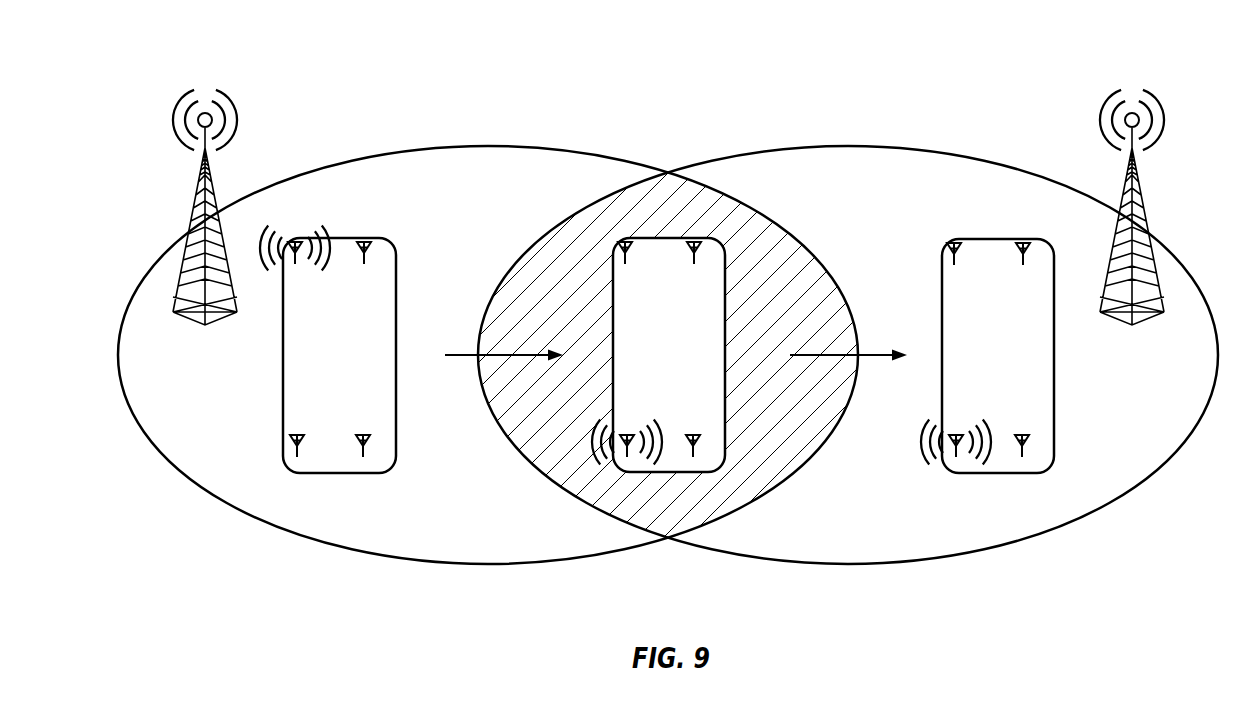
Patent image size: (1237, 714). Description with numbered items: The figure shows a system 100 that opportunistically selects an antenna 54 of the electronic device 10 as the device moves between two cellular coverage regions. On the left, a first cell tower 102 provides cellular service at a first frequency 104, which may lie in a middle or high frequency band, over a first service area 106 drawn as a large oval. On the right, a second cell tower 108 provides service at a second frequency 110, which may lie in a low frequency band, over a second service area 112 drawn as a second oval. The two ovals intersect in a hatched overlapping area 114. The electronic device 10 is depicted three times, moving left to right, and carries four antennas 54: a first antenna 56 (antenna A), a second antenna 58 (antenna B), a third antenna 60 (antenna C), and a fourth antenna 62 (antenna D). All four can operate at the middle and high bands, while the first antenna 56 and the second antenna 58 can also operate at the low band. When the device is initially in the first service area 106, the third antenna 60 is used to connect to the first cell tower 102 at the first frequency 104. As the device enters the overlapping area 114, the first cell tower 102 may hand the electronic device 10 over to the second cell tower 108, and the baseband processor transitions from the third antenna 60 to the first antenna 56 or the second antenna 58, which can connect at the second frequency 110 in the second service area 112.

The electronic device 10 is at (623, 298).
The antennas 54 is at (333, 331).
The first antenna 56 is at (292, 442).
The second antenna 58 is at (370, 442).
The third antenna 60 is at (297, 240).
The fourth antenna 62 is at (378, 252).
The system 100 is at (690, 58).
The first cell tower 102 is at (192, 213).
The first frequency 104 is at (215, 190).
The first service area 106 is at (478, 553).
The second cell tower 108 is at (1144, 209).
The second frequency 110 is at (1158, 190).
The second service area 112 is at (853, 553).
The overlapping area 114 is at (668, 541).